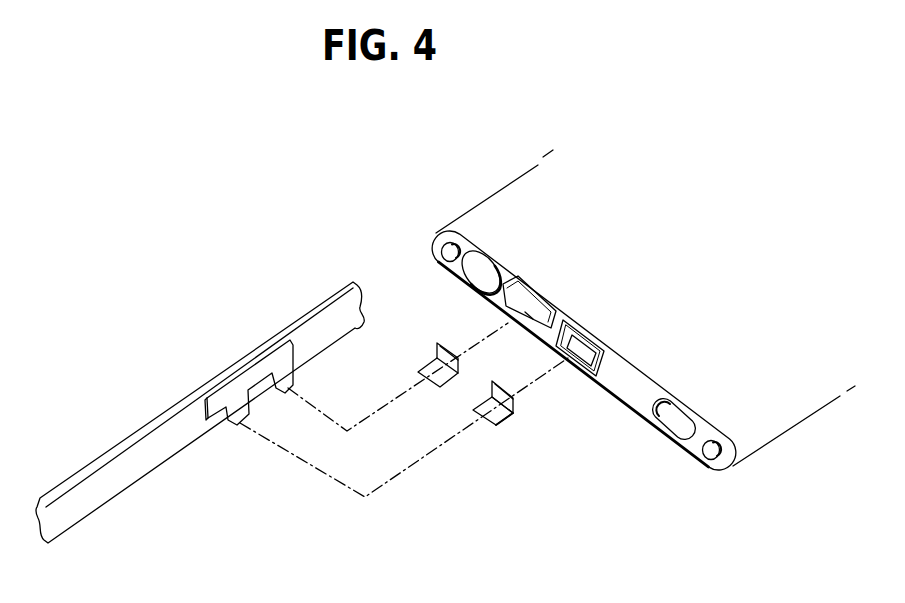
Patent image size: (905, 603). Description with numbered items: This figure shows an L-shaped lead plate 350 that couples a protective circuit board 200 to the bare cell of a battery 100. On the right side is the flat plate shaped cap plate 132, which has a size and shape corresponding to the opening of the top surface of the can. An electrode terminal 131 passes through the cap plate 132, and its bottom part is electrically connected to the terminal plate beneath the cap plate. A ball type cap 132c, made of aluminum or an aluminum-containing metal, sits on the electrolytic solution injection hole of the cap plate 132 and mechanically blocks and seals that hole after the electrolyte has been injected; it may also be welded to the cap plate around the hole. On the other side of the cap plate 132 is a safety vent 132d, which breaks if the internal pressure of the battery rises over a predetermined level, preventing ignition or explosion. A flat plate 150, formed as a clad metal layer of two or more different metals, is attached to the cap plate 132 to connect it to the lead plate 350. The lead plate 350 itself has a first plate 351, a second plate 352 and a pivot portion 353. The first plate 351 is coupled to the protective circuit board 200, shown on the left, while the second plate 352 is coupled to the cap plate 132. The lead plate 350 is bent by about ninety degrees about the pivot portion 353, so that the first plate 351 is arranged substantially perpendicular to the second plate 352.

The mobile terminal body 100 is at (492, 192).
The cap plate 132 is at (635, 387).
The cap 132c is at (477, 262).
The flat plate 150 is at (517, 300).
The electrode terminal 131 is at (582, 362).
The safety vent 132d is at (675, 423).
The protective circuit board 200 is at (310, 327).
The lead plate 350 is at (503, 393).
The first plate 351 is at (483, 415).
The second plate 352 is at (517, 410).
The pivot portion 353 is at (510, 423).